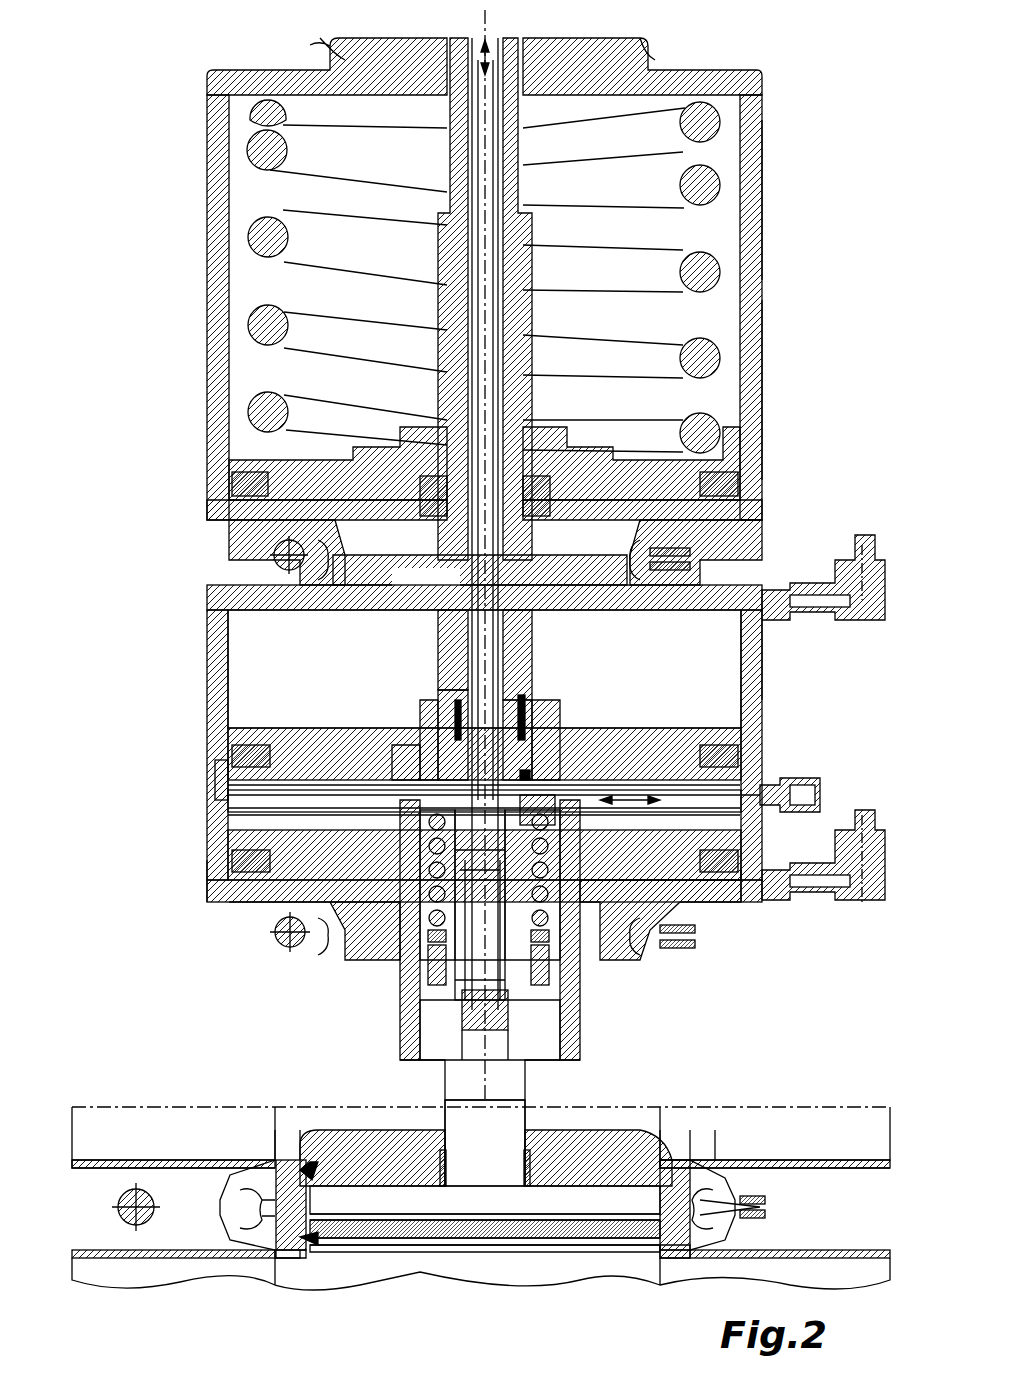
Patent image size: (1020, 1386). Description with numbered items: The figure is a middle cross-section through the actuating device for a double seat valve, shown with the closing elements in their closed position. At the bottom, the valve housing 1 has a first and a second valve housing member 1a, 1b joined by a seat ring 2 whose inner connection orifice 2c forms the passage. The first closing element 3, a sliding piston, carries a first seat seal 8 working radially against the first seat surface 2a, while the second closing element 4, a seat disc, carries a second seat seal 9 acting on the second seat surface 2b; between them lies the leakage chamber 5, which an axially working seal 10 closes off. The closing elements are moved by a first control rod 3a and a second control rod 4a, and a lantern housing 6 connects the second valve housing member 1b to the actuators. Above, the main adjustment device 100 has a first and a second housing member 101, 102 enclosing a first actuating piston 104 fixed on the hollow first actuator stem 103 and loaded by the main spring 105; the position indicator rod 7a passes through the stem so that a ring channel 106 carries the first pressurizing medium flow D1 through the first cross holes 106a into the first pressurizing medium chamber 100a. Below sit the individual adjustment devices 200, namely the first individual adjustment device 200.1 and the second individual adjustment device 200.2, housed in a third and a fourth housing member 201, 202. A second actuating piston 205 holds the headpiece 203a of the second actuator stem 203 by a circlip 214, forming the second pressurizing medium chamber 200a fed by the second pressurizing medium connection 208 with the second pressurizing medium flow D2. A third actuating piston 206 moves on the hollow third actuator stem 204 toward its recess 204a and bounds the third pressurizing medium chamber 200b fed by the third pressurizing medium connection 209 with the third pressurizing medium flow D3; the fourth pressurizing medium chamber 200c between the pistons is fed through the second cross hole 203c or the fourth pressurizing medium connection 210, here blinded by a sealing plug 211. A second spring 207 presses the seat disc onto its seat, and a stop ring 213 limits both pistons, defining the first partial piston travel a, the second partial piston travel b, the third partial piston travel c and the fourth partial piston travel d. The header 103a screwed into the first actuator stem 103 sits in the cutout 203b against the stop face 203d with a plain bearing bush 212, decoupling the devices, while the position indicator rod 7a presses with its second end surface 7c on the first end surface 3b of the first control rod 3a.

The valve housing 1 is at (168, 1207).
The first valve housing member 1a is at (98, 1265).
The second valve housing member 1b is at (100, 1125).
The seat ring 2 is at (745, 1140).
The first seat surface 2a is at (668, 1255).
The second seat surface 2b is at (702, 1140).
The connection orifice 2c is at (312, 1205).
The first closing element 3 is at (516, 1232).
The first control rod 3a is at (487, 1120).
The first end surface 3b is at (505, 955).
The second closing element 4 is at (600, 1130).
The second control rod 4a is at (548, 1115).
The leakage chamber 5 is at (408, 1200).
The lantern housing 6 is at (570, 1013).
The position indicator rod 7a is at (485, 170).
The second end surface 7c is at (548, 795).
The first seat seal 8 is at (312, 1243).
The second seat seal 9 is at (308, 1143).
The seal 10 is at (333, 1150).
The main adjustment device 100 is at (780, 310).
The first pressurizing medium chamber 100a is at (270, 535).
The first housing member 101 is at (745, 197).
The second housing member 102 is at (750, 400).
The first actuator stem 103 is at (455, 295).
The header 103a is at (460, 650).
The first actuating piston 104 is at (305, 470).
The main spring 105 is at (700, 272).
The ring channel 106 is at (500, 262).
The first cross holes 106a is at (480, 578).
The individual adjustment devices 200 is at (770, 718).
The first individual adjustment device 200.1 is at (745, 678).
The second individual adjustment device 200.2 is at (730, 895).
The second pressurizing medium chamber 200a is at (484, 669).
The third pressurizing medium chamber 200b is at (700, 882).
The fourth pressurizing medium chamber 200c is at (672, 950).
The third housing member 201 is at (215, 632).
The fourth housing member 202 is at (218, 893).
The second actuator stem 203 is at (410, 875).
The headpiece 203a is at (420, 765).
The cutout 203b is at (452, 705).
The second cross hole 203c is at (525, 775).
The stop face 203d is at (528, 740).
The third actuator stem 204 is at (433, 885).
The recess 204a is at (558, 812).
The second actuating piston 205 is at (285, 745).
The third actuating piston 206 is at (290, 853).
The second spring 207 is at (285, 942).
The second pressurizing medium connection 208 is at (768, 600).
The third pressurizing medium connection 209 is at (770, 885).
The fourth pressurizing medium connection 210 is at (770, 800).
The sealing plug 211 is at (640, 810).
The plain bearing bush 212 is at (522, 700).
The stop ring 213 is at (222, 790).
The circlip 214 is at (392, 740).
The first pressurizing medium flow D1 is at (520, 70).
The second pressurizing medium flow D2 is at (862, 505).
The third pressurizing medium flow D3 is at (862, 795).
The first partial piston travel a is at (118, 752).
The second partial piston travel b is at (350, 820).
The third partial piston travel c is at (132, 795).
The fourth partial piston travel d is at (383, 860).